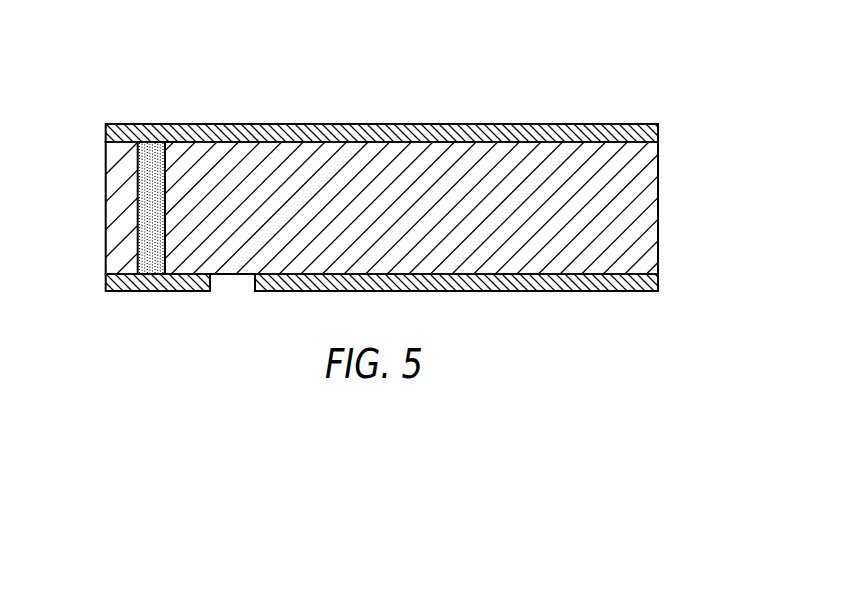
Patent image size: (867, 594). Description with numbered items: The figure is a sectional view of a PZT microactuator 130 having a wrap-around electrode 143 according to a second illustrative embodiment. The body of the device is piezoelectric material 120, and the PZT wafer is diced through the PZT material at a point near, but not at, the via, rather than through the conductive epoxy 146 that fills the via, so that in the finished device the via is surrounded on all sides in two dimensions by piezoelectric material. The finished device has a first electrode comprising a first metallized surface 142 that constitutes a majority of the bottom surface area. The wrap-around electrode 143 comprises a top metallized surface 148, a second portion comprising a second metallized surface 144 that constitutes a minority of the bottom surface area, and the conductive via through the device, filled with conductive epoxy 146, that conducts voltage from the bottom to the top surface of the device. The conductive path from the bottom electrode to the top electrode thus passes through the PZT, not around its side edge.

The substrate body 120 is at (632, 208).
The microactuator 130 is at (673, 68).
The first metallized surface 142 is at (545, 291).
The wrap-around electrode 143 is at (317, 124).
The second metallized surface 144 is at (155, 292).
The conductive epoxy 146 is at (152, 215).
The top metallized surface 148 is at (541, 124).